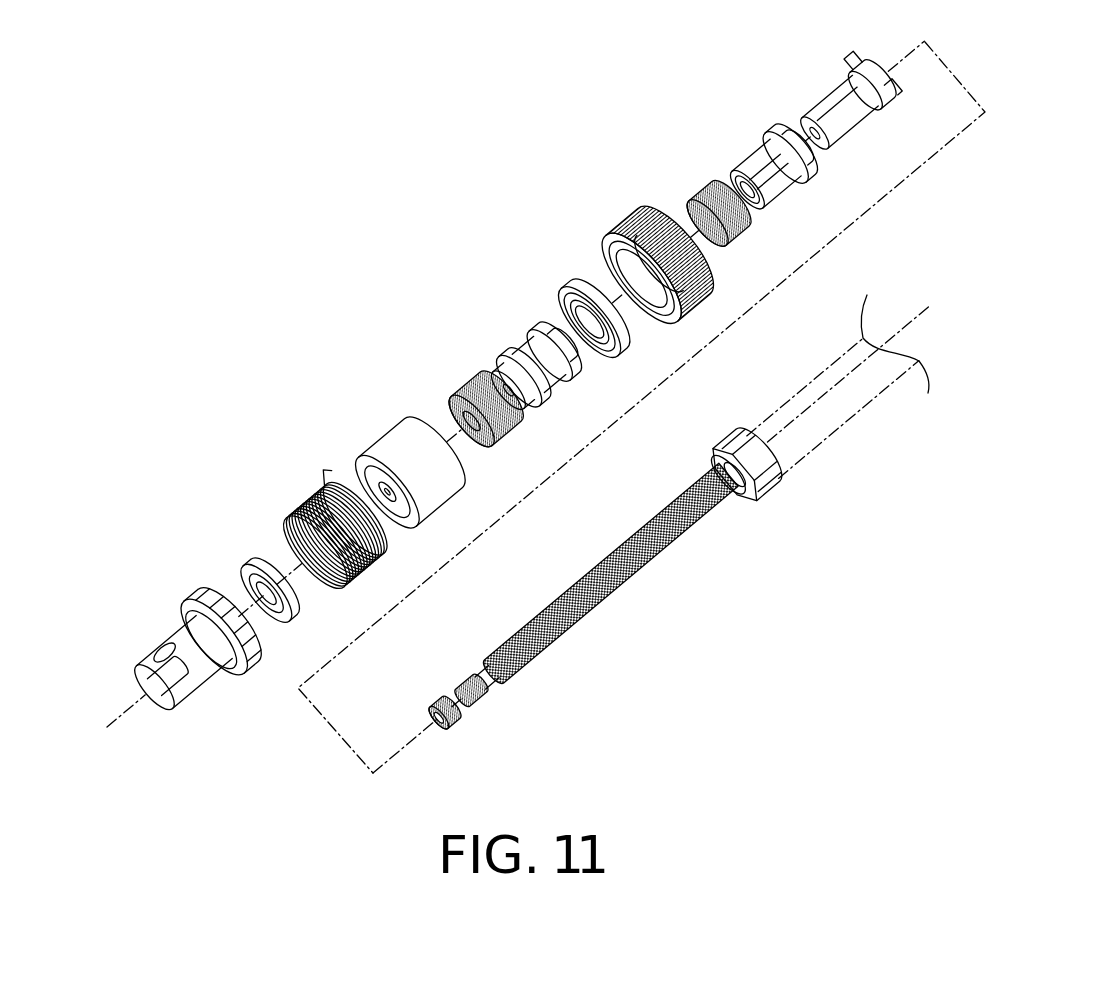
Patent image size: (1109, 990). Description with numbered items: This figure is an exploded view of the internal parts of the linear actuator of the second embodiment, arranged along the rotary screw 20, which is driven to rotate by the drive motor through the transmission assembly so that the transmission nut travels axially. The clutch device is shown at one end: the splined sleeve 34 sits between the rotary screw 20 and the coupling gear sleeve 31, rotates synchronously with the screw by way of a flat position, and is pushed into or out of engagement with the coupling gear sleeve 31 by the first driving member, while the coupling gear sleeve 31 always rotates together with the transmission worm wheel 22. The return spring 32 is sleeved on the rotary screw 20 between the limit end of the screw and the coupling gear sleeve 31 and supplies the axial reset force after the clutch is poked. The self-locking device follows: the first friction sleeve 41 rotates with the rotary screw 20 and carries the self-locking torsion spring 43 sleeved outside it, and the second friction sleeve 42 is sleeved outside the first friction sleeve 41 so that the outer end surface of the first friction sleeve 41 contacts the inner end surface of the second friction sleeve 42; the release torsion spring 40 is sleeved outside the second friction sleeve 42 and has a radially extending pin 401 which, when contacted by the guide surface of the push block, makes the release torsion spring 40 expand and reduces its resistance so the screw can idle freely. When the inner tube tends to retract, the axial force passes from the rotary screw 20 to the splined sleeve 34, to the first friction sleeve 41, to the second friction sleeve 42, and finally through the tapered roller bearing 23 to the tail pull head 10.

The tail pull head 10 is at (187, 627).
The rotary screw 20 is at (595, 608).
The transmission worm wheel 22 is at (637, 217).
The tapered roller bearing 23 is at (257, 562).
The coupling gear sleeve 31 is at (767, 160).
The return spring 32 is at (708, 195).
The splined sleeve 34 is at (842, 97).
The release torsion spring 40 is at (302, 496).
The pin 401 is at (328, 468).
The first friction sleeve 41 is at (530, 348).
The second friction sleeve 42 is at (395, 445).
The self-locking torsion spring 43 is at (480, 387).